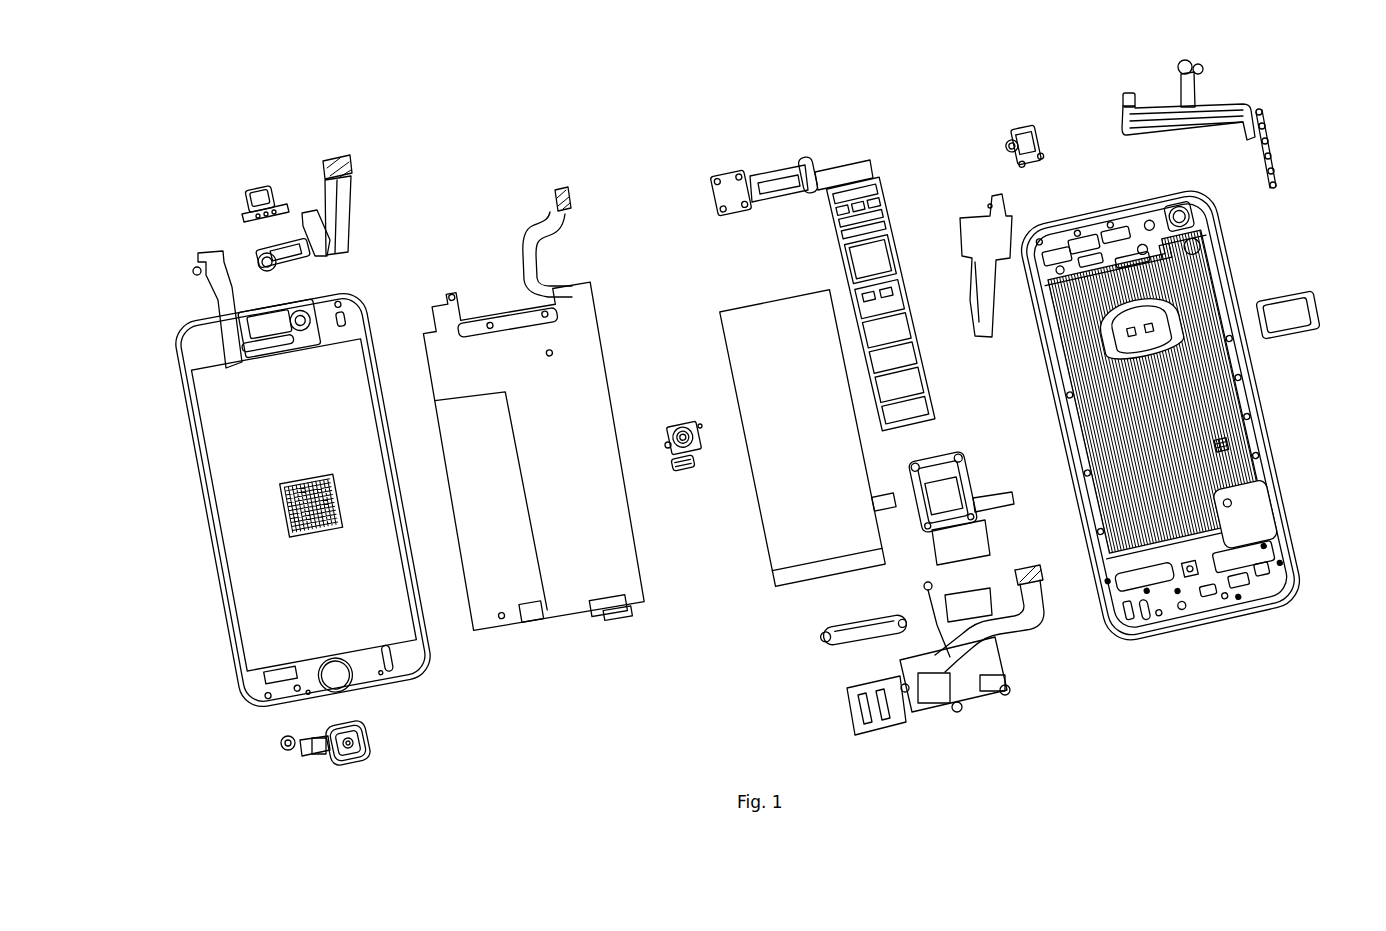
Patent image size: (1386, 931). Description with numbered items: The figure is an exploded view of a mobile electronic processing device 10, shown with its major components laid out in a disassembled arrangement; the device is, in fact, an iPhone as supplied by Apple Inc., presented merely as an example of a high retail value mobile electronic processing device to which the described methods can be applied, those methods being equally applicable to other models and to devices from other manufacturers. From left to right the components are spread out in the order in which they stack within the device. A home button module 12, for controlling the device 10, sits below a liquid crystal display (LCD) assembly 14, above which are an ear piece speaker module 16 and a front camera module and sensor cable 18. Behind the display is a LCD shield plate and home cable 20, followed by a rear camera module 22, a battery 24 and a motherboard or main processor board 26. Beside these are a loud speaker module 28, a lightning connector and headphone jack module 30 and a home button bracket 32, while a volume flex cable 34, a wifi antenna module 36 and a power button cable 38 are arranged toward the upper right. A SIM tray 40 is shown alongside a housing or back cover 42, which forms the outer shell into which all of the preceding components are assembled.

The mobile electronic processing device 10 is at (673, 150).
The home button module 12 is at (370, 748).
The liquid crystal display (LCD) assembly 14 is at (207, 490).
The ear piece speaker module 16 is at (261, 187).
The front camera module and sensor cable 18 is at (352, 178).
The LCD shield plate and home cable 20 is at (593, 316).
The rear camera module 22 is at (703, 428).
The battery 24 is at (729, 366).
The motherboard or main processor board 26 is at (826, 180).
The loud speaker module 28 is at (938, 456).
The lightning connector and headphone jack module 30 is at (985, 700).
The home button bracket 32 is at (836, 648).
The volume flex cable 34 is at (970, 298).
The wifi antenna module 36 is at (1027, 126).
The power button cable 38 is at (1145, 105).
The SIM tray 40 is at (1322, 307).
The housing or back cover 42 is at (1267, 430).